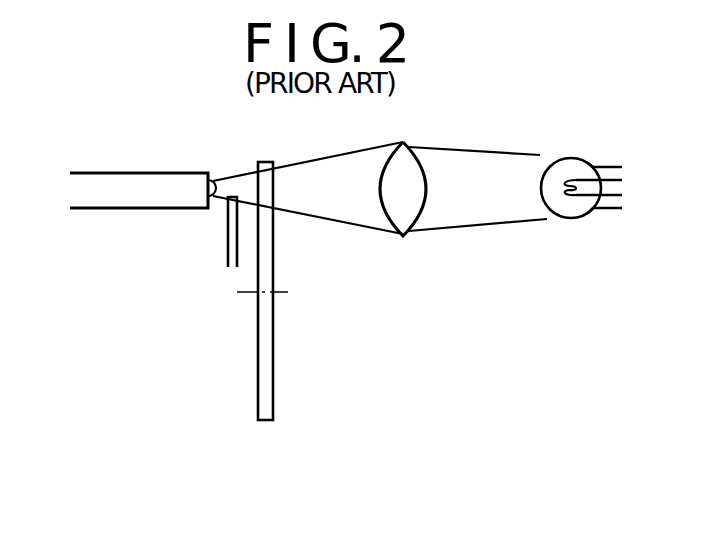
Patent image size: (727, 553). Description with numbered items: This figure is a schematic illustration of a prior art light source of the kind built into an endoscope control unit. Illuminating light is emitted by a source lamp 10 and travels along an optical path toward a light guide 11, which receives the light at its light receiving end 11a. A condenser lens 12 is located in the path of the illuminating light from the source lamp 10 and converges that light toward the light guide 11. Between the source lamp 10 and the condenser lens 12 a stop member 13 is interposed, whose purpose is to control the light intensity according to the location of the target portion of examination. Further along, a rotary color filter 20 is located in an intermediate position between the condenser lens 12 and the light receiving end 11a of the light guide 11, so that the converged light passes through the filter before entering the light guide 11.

The source lamp 10 is at (568, 220).
The light guide 11 is at (115, 173).
The light incident end face of optical fiber 11a is at (218, 177).
The condenser lens 12 is at (405, 238).
The stop member 13 is at (228, 240).
The rotary color filter 20 is at (273, 375).